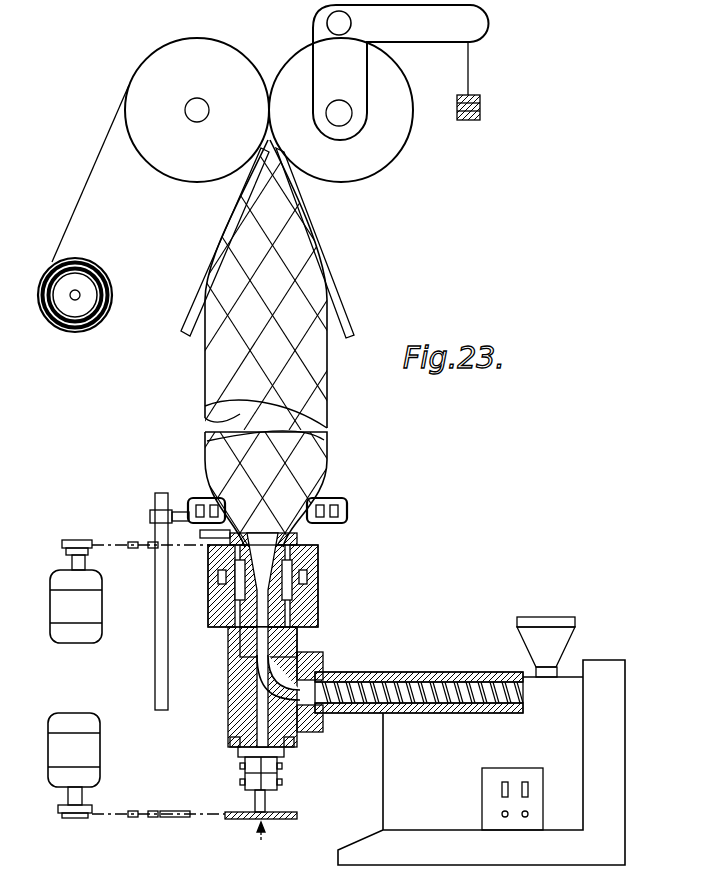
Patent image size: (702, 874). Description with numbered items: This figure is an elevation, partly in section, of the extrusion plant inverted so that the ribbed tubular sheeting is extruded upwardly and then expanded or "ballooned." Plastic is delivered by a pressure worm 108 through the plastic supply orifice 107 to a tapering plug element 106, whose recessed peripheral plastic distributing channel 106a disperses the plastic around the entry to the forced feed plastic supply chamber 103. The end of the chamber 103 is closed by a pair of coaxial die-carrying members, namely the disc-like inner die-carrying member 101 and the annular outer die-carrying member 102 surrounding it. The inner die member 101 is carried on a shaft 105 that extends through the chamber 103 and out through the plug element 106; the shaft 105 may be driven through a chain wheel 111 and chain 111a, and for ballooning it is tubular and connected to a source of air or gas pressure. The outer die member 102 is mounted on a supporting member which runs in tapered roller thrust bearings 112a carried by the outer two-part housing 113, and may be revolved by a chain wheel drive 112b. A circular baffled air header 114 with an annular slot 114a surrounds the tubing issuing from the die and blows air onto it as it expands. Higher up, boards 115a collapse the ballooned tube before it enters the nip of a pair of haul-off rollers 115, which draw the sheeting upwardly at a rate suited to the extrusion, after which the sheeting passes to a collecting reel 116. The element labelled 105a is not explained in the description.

The haul-off rollers 115 is at (172, 160).
The boards 115a is at (213, 258).
The collecting reel 116 is at (92, 323).
The annular slot 114a is at (220, 500).
The circular baffled air header 114 is at (347, 503).
The inner die-carrying member 101 is at (245, 540).
The die cap 105a is at (297, 540).
The outer die-carrying member 102 is at (300, 552).
The chain wheel drive 112b is at (323, 550).
The tapered roller thrust bearings 112a is at (215, 604).
The outer two-part housing 113 is at (323, 596).
The forced feed plastic supply chamber 103 is at (230, 630).
The shaft 105 is at (318, 615).
The plastic distributing channel 106a is at (257, 655).
The tapering plug element 106 is at (250, 685).
The plastic supply orifice 107 is at (322, 713).
The pressure worm 108 is at (453, 688).
The chain 111a is at (158, 811).
The chain wheel 111 is at (290, 810).